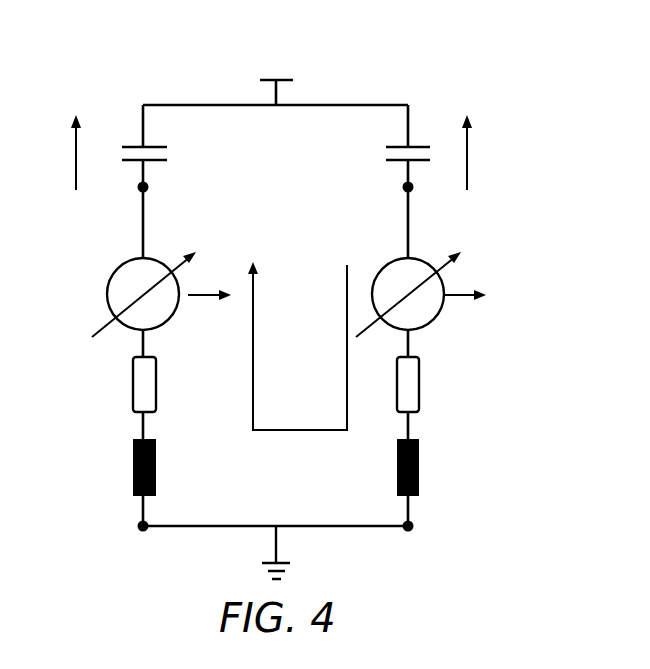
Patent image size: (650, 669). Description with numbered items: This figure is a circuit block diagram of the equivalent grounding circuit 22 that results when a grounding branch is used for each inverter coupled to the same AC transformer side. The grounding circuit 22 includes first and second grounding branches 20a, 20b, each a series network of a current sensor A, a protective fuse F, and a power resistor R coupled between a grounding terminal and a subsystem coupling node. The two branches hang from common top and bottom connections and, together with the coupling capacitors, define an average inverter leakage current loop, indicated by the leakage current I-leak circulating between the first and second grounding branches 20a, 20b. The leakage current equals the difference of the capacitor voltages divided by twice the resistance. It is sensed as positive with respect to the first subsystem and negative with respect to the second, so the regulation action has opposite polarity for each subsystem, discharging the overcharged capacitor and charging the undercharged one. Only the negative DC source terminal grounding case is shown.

The grounding circuit 22 is at (100, 74).
The first grounding branch 20a is at (95, 414).
The second grounding branch 20b is at (472, 409).